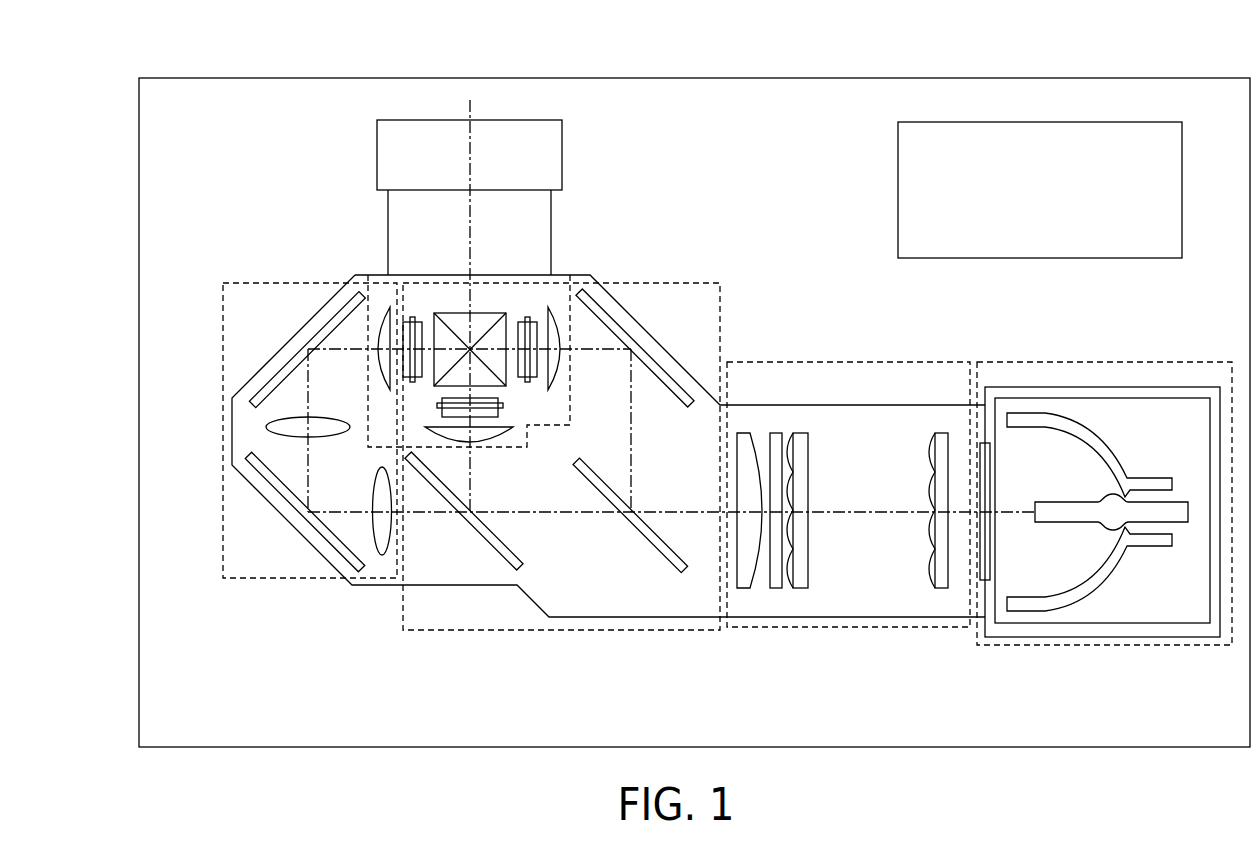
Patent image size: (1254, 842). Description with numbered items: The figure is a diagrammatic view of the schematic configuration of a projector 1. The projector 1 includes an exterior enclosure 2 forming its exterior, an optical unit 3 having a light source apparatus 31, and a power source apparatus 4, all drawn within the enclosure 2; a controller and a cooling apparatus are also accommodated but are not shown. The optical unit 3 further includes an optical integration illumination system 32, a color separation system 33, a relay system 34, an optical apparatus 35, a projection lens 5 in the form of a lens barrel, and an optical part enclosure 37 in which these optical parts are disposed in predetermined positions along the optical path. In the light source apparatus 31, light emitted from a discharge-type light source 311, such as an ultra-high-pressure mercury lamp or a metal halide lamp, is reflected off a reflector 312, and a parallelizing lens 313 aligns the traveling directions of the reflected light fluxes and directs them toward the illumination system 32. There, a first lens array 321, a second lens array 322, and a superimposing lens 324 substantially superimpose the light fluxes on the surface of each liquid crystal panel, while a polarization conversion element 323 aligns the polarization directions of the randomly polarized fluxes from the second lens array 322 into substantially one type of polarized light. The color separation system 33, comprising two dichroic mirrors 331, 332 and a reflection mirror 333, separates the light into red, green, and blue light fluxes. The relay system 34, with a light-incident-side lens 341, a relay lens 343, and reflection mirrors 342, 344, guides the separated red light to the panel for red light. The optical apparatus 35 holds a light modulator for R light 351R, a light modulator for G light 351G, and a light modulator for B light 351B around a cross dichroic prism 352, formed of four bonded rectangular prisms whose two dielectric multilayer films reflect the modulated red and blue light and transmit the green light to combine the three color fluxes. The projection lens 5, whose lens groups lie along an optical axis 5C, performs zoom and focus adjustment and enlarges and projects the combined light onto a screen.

The projector 1 is at (808, 67).
The exterior enclosure 2 is at (139, 250).
The optical unit 3 is at (702, 163).
The power source apparatus 4 is at (898, 196).
The projection lens 5 is at (565, 152).
The optical axis 5C is at (470, 153).
The light source apparatus 31 is at (1009, 647).
The light source 311 is at (1072, 515).
The reflector 312 is at (1117, 557).
The parallelizing lens 313 is at (983, 557).
The optical integration illumination system 32 is at (772, 630).
The first lens array 321 is at (943, 433).
The second lens array 322 is at (801, 433).
The polarization conversion element 323 is at (773, 433).
The superimposing lens 324 is at (744, 433).
The color separation system 33 is at (638, 632).
The dichroic mirror 331 is at (658, 552).
The dichroic mirror 332 is at (495, 553).
The reflection mirror 333 is at (655, 357).
The relay system 34 is at (223, 441).
The light-incident-side lens 341 is at (382, 545).
The reflection mirror 342 is at (246, 459).
The relay lens 343 is at (320, 430).
The reflection mirror 344 is at (289, 352).
The optical apparatus 35 is at (478, 304).
The light modulator for R light 351R is at (412, 315).
The light modulator for G light 351G is at (504, 405).
The light modulator for B light 351B is at (524, 320).
The cross dichroic prism 352 is at (487, 320).
The optical part enclosure 37 is at (697, 618).